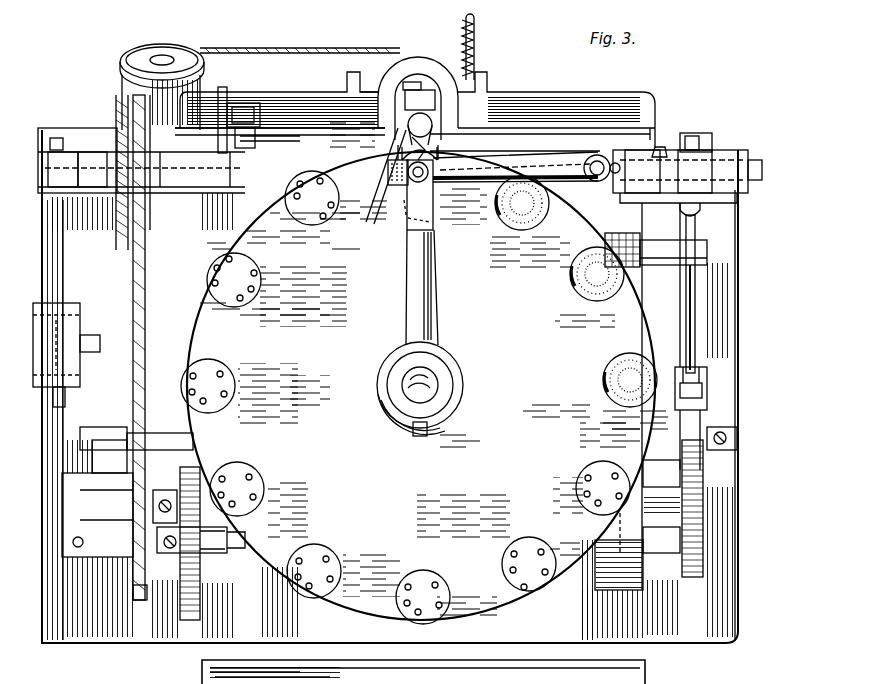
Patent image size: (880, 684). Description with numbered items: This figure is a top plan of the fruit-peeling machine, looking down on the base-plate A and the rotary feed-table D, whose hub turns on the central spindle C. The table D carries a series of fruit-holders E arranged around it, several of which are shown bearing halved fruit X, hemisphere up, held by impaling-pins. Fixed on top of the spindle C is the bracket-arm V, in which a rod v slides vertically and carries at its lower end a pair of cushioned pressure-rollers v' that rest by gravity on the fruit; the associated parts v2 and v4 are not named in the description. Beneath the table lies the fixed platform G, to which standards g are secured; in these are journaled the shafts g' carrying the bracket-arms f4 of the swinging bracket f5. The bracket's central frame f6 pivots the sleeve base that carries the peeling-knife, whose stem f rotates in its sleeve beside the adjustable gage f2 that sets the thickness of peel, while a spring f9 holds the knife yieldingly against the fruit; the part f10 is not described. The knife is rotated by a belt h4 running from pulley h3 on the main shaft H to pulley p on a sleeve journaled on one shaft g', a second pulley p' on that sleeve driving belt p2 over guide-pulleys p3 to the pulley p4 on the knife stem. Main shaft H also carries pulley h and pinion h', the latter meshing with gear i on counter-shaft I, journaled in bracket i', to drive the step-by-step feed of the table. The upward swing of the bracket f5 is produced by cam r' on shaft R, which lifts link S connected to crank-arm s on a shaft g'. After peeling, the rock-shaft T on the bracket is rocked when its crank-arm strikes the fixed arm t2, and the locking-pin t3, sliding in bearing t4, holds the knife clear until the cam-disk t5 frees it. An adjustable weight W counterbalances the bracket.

The base-plate A is at (90, 633).
The shafts g' is at (503, 418).
The feed-table D is at (640, 337).
The fruit-holders E is at (405, 396).
The fruit X is at (522, 232).
The bracket-arm V is at (440, 308).
The spindle C is at (430, 380).
The pressure-rollers v' is at (426, 189).
The rod v is at (399, 186).
The connecting rod v4 is at (530, 158).
The pivot v2 is at (600, 158).
The swinging bracket f5 is at (290, 95).
The central frame f6 is at (428, 60).
The stem f is at (395, 140).
The gage f2 is at (430, 145).
The spring f9 is at (475, 40).
The spring rod f10 is at (476, 60).
The pulley p4 is at (378, 80).
The bracket-arms f4 is at (660, 110).
The belt p2 is at (265, 48).
The guide-pulleys p3 is at (158, 80).
The pulley p' is at (103, 172).
The pulley p is at (164, 168).
The belt h4 is at (146, 310).
The fixed arm t2 is at (227, 92).
The bearing t4 is at (255, 103).
The locking-pin t3 is at (270, 145).
The cam-disk t5 is at (242, 150).
The rock-shaft T is at (322, 130).
The standards g is at (402, 168).
The crank-arm s is at (700, 133).
The adjustable weight W is at (90, 300).
The platform G is at (645, 287).
The link S is at (696, 328).
The cam r' is at (720, 418).
The shaft R is at (740, 436).
The pulley h is at (649, 528).
The main shaft H is at (80, 504).
The pinion h' is at (165, 491).
The bracket i' is at (192, 536).
The gear i is at (206, 543).
The counter-shaft I is at (238, 552).
The pulley h3 is at (130, 592).